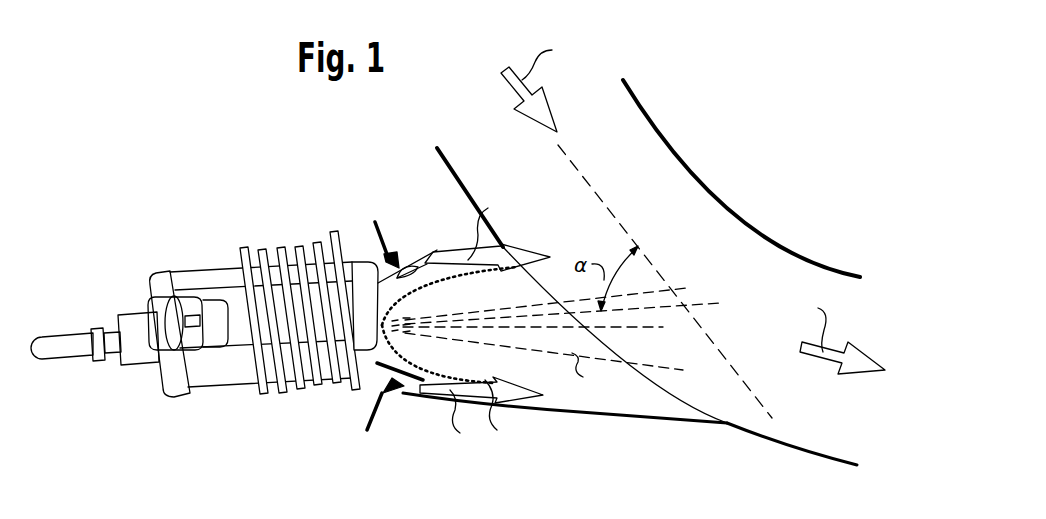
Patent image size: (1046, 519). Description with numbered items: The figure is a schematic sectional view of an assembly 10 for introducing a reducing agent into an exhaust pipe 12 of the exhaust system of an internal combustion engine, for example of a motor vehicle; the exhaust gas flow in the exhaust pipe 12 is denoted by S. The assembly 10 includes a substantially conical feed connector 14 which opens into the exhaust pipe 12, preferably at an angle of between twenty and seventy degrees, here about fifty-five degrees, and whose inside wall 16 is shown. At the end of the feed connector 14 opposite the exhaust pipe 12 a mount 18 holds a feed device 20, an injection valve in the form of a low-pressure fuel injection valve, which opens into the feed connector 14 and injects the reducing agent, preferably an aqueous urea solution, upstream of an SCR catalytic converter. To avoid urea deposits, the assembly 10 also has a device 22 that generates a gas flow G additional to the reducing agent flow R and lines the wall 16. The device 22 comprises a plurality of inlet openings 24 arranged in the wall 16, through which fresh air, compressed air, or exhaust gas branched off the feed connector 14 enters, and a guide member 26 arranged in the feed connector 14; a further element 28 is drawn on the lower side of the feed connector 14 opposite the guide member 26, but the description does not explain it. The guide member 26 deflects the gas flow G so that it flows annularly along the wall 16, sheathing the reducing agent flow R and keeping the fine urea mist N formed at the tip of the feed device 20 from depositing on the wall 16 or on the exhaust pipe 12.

The assembly 10 is at (262, 173).
The exhaust pipe 12 is at (697, 168).
The feed connector 14 is at (642, 403).
The wall 16 is at (547, 410).
The mount 18 is at (373, 368).
The feed device 20 is at (215, 367).
The device 22 is at (423, 245).
The inlet openings 24 is at (385, 263).
The guide member 26 is at (416, 266).
The lower gap 28 is at (413, 384).